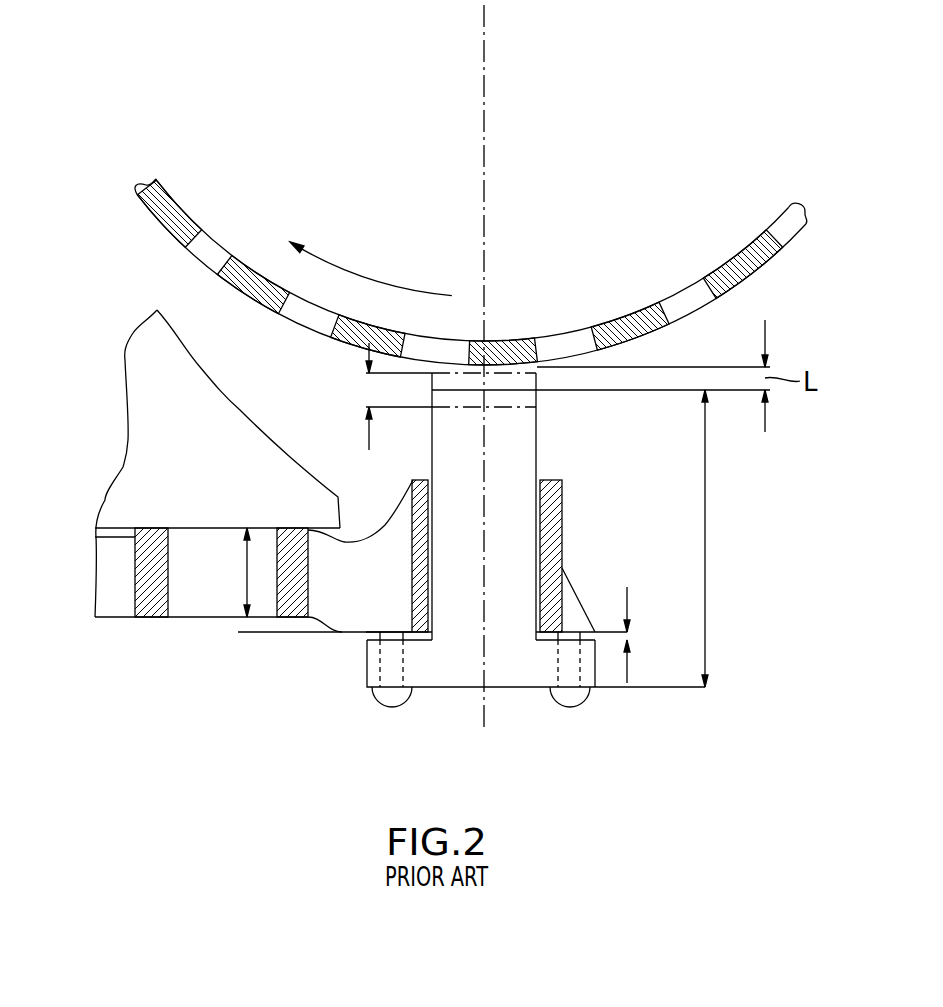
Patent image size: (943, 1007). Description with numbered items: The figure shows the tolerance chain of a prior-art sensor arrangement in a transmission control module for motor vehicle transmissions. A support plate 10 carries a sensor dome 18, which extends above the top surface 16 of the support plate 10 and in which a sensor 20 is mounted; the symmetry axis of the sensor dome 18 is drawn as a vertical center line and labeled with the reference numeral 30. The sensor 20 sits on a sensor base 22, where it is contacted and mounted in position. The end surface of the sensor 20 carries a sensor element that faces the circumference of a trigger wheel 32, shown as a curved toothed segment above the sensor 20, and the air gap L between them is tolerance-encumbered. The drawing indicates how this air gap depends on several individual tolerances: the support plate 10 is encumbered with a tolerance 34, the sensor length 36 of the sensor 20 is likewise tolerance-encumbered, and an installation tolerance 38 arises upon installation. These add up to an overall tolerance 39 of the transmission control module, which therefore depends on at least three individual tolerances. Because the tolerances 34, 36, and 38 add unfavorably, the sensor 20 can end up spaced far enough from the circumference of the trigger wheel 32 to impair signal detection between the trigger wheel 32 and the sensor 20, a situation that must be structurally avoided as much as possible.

The support plate 10 is at (152, 597).
The top surface 16 is at (290, 527).
The sensor dome 18 is at (551, 541).
The sensor 20 is at (513, 438).
The sensor base 22 is at (443, 672).
The symmetry axis 30 is at (486, 48).
The trigger wheel 32 is at (624, 320).
The tolerance 34 is at (247, 578).
The sensor length 36 is at (706, 533).
The installation tolerance 38 is at (627, 636).
The overall tolerance 39 is at (369, 389).